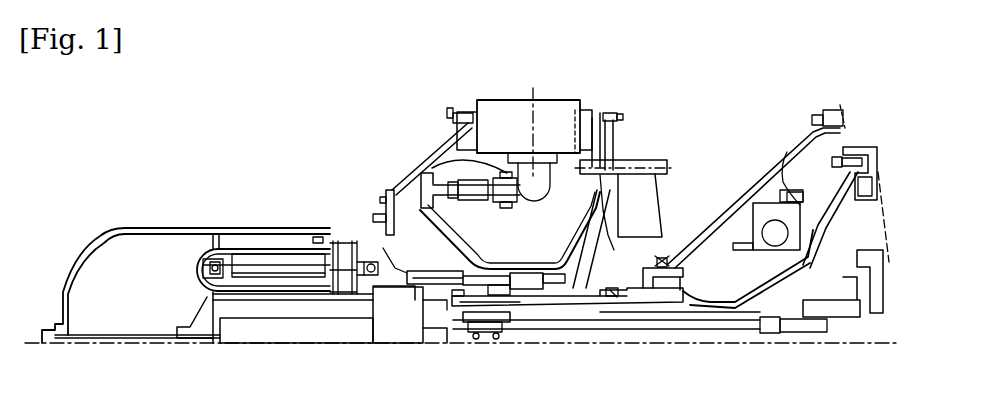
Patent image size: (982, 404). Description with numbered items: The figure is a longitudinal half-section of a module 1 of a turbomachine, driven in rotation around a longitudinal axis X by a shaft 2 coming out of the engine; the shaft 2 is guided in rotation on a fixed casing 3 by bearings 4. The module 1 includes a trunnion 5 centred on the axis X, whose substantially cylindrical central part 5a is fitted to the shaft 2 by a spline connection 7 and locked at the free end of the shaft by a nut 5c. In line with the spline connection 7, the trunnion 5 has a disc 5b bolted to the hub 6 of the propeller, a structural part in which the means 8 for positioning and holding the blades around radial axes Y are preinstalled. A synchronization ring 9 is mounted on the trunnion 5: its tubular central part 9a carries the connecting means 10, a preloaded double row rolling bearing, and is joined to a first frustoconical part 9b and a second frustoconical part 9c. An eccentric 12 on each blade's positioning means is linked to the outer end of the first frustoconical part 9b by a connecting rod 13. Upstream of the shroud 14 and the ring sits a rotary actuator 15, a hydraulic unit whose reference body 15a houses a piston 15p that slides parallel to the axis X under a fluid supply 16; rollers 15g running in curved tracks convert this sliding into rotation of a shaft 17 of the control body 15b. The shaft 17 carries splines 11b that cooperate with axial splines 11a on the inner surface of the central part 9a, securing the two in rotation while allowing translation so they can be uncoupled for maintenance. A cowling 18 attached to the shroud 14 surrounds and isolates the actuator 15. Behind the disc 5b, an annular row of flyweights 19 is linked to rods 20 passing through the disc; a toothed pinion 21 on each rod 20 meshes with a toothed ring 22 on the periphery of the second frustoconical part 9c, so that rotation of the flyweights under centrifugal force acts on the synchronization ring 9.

The module 1 is at (320, 122).
The shaft 2 is at (713, 300).
The fixed casing 3 is at (740, 184).
The bearings 4 is at (772, 233).
The trunnion 5 is at (608, 302).
The central part of the trunnion 5a is at (548, 300).
The disc 5b is at (615, 146).
The nut 5c is at (447, 303).
The hub 6 is at (477, 114).
The spline connection 7 is at (585, 302).
The means for positioning and holding the blades 8 is at (517, 115).
The synchronization ring 9 is at (486, 266).
The central part of the synchronization ring 9a is at (460, 270).
The first frustoconical part 9b is at (425, 230).
The second frustoconical part 9c is at (571, 252).
The connecting means 10 is at (527, 290).
The axial splines 11a is at (440, 293).
The splines 11b is at (435, 321).
The eccentric 12 is at (428, 167).
The connecting rod 13 is at (472, 192).
The shroud 14 is at (443, 144).
The rotary actuator 15 is at (170, 143).
The reference body 15a is at (283, 258).
The control body 15b is at (256, 270).
The rollers 15g is at (348, 238).
The piston 15p is at (272, 316).
The fluid supply 16 is at (663, 331).
The shaft 17 is at (385, 293).
The cowling 18 is at (100, 235).
The flyweights 19 is at (637, 217).
The rods 20 is at (663, 160).
The toothed pinion 21 is at (583, 197).
The toothed ring 22 is at (597, 202).
The longitudinal axis X is at (860, 345).
The radial axes Y is at (527, 93).